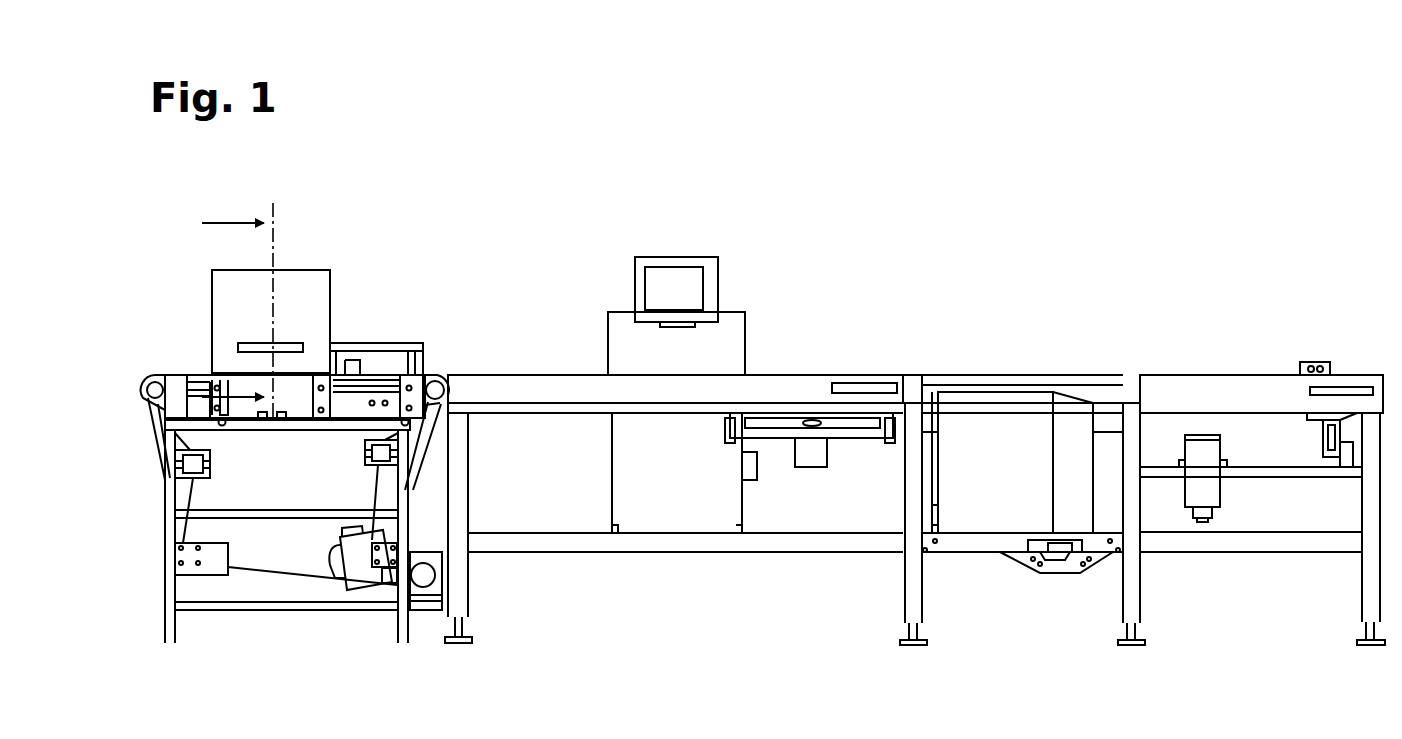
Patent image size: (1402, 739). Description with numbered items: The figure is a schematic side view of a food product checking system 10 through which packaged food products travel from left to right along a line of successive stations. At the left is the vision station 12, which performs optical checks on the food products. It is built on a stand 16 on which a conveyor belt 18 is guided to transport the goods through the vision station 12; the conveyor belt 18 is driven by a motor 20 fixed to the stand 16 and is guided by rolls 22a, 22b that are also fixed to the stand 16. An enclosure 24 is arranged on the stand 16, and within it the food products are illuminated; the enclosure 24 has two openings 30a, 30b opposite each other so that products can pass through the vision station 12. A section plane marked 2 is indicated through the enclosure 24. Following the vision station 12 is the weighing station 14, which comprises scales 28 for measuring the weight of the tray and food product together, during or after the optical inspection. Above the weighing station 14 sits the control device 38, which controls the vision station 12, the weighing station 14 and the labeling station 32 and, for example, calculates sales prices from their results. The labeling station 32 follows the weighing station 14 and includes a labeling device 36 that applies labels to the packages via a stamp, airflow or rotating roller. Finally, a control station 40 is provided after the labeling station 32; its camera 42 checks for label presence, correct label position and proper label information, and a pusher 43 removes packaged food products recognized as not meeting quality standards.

The section line 2 is at (237, 326).
The food product checking system 10 is at (988, 204).
The vision station 12 is at (351, 270).
The weighing station 14 is at (820, 368).
The stand 16 is at (172, 560).
The conveyor belt 18 is at (176, 388).
The motor 20 is at (356, 567).
The roll 22a is at (144, 392).
The roll 22b is at (445, 378).
The enclosure 24 is at (312, 285).
The scales 28 is at (813, 456).
The opening 30a is at (212, 372).
The opening 30b is at (334, 355).
The labeling station 32 is at (987, 392).
The labeling device 36 is at (987, 520).
The control device 38 is at (720, 342).
The control station 40 is at (1197, 397).
The camera 42 is at (1205, 498).
The pusher 43 is at (1318, 362).